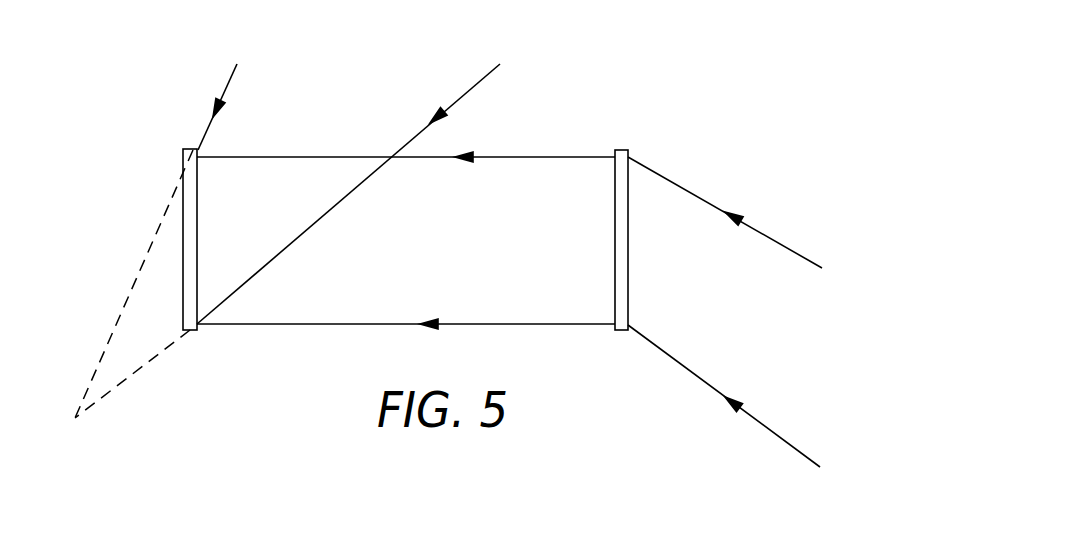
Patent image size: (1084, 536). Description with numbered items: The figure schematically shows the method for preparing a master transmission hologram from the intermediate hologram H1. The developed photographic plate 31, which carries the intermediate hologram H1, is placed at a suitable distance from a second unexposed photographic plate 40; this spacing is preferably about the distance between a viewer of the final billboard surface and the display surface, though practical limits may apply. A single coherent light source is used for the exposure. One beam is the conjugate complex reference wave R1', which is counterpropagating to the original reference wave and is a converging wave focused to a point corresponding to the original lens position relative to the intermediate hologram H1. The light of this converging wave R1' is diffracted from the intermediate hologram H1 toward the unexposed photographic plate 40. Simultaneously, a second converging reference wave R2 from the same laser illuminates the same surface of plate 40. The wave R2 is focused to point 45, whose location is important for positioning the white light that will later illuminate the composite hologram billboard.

The second unexposed photographic plate 40 is at (183, 148).
The developed photographic plate 31 is at (625, 150).
The focal point of reference wave R2 45 is at (73, 420).
The reference wave R2 is at (360, 183).
The conjugate complex reference wave R1' is at (725, 312).
The intermediate hologram H1 is at (620, 331).